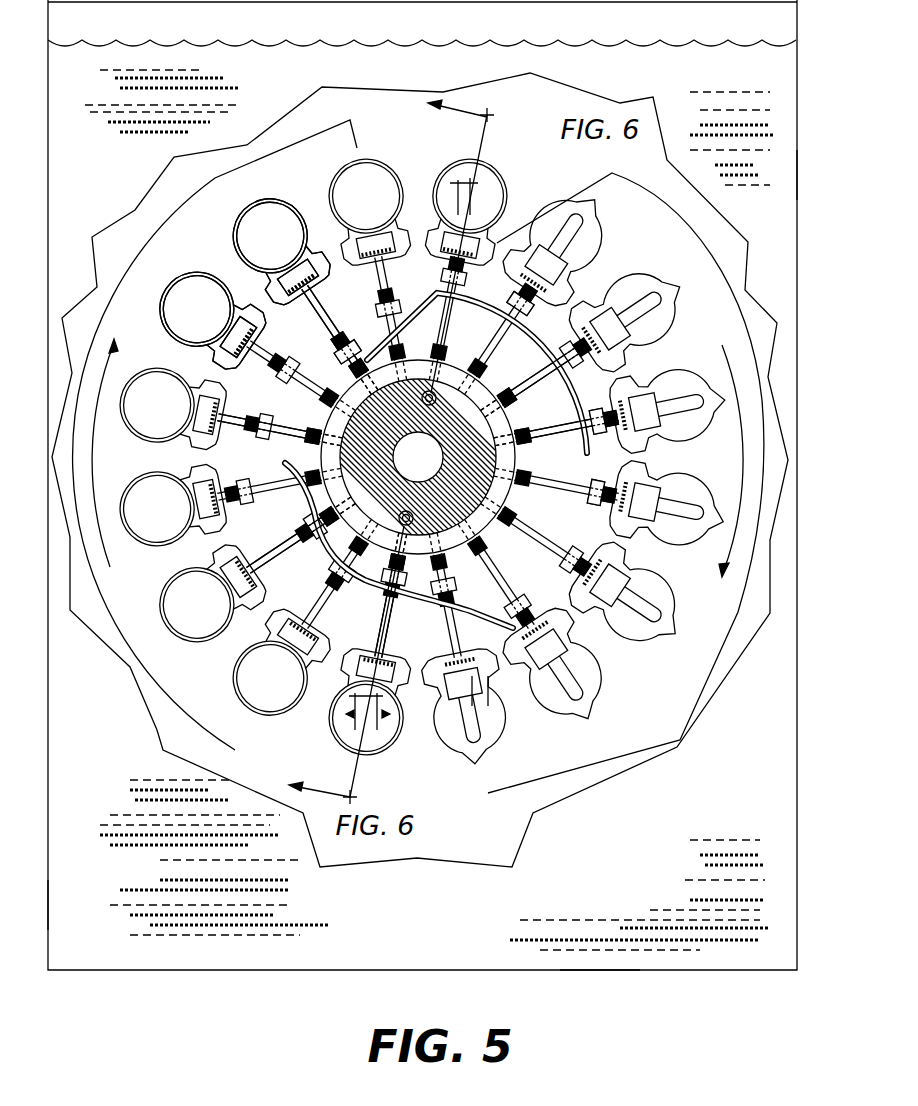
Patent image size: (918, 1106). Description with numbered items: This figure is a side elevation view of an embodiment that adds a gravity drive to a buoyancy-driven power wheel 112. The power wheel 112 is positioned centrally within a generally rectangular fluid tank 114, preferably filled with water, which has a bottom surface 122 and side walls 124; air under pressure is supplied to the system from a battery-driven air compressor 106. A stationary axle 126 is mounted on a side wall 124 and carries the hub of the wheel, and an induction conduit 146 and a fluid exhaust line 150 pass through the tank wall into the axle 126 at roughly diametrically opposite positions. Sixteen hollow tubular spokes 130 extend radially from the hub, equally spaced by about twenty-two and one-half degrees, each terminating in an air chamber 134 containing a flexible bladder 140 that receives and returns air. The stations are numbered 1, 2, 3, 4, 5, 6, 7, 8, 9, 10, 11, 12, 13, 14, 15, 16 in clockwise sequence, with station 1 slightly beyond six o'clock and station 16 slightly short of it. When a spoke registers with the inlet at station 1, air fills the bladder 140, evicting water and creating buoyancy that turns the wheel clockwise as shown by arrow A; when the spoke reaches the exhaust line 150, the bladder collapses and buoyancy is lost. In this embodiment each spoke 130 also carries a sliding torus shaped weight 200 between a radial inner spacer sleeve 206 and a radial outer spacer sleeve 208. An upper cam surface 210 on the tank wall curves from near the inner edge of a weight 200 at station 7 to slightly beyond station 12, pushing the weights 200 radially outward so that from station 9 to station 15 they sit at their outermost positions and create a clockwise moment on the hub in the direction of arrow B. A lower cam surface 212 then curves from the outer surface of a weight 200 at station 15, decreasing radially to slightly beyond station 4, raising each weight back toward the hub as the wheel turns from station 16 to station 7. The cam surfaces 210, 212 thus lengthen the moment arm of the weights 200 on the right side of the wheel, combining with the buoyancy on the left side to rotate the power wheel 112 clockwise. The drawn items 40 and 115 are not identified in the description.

The station position one 1 is at (381, 786).
The station position two 2 is at (286, 736).
The station position three 3 is at (203, 671).
The station position four 4 is at (138, 573).
The station position five 5 is at (108, 446).
The station position six 6 is at (138, 327).
The station position seven 7 is at (211, 253).
The station position eight 8 is at (318, 164).
The station position nine 9 is at (510, 179).
The station position ten 10 is at (615, 221).
The station position eleven 11 is at (688, 327).
The station position twelve 12 is at (706, 451).
The station position thirteen 13 is at (683, 571).
The station position fourteen 14 is at (643, 671).
The station position fifteen 15 is at (553, 741).
The station position sixteen 16 is at (435, 781).
The lamp 40 is at (466, 192).
The air compressor 106 is at (738, 614).
The power wheel 112 is at (580, 790).
The fluid tank 114 is at (797, 178).
The lamp 115 is at (352, 733).
The bottom surface 122 is at (598, 972).
The side wall 124 is at (48, 905).
The axle 126 is at (360, 480).
The tubular spoke 130 is at (345, 585).
The air chamber 134 is at (168, 284).
The flexible bladder 140 is at (487, 733).
The induction conduit 146 is at (413, 520).
The fluid exhaust line 150 is at (464, 358).
The torus shaped weight 200 is at (327, 242).
The radial inner spacer sleeve 206 is at (312, 354).
The radial outer spacer sleeve 208 is at (278, 413).
The upper cam surface 210 is at (422, 294).
The lower cam surface 212 is at (320, 565).
The arrow A is at (92, 585).
The arrow B is at (753, 530).